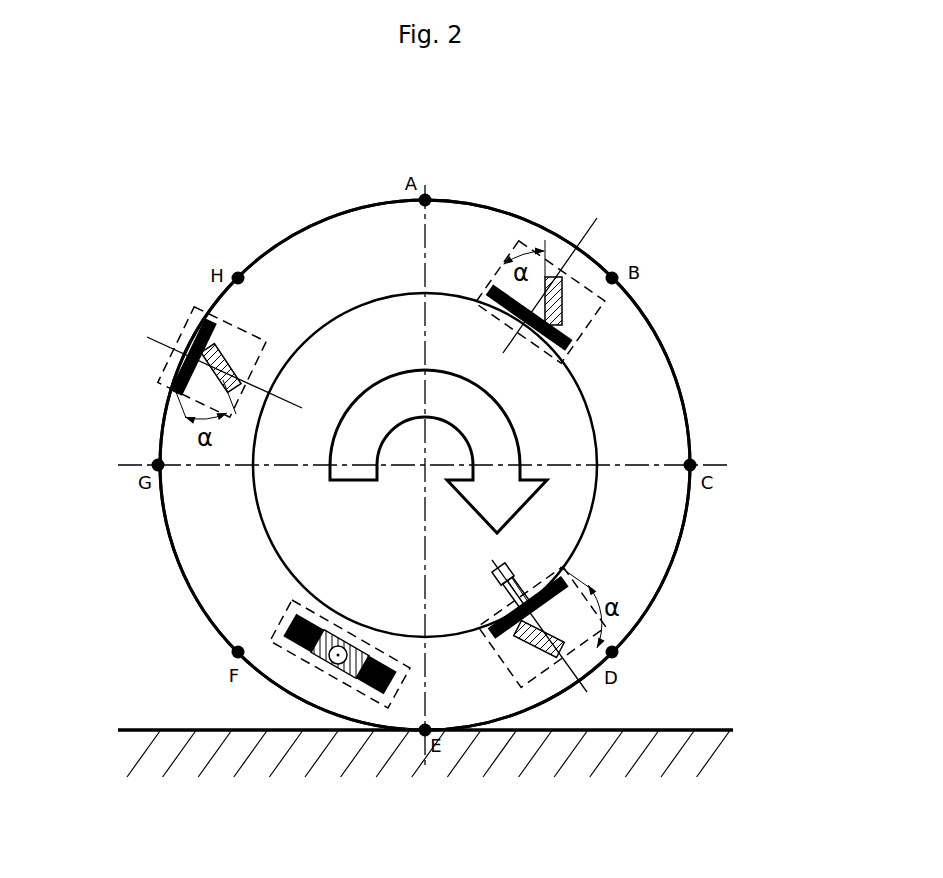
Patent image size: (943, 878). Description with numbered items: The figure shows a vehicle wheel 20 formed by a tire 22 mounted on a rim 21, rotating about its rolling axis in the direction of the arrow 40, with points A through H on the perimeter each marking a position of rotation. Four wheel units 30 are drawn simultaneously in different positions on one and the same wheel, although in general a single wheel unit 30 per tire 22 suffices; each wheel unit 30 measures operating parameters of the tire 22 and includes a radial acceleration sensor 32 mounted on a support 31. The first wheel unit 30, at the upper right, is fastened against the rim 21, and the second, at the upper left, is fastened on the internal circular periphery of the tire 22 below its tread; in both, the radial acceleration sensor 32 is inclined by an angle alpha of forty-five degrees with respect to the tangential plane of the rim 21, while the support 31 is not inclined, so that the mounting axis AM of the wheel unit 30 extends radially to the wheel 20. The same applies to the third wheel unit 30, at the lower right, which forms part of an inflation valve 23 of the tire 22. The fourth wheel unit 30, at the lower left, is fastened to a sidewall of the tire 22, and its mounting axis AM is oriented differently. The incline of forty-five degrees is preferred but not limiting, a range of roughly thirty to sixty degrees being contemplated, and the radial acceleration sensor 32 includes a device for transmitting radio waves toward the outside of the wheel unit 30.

The vehicle wheel 20 is at (690, 376).
The rim 21 is at (600, 447).
The tire 22 is at (328, 263).
The inflation valve 23 is at (520, 578).
The wheel unit 30 is at (193, 307).
The support 31 is at (178, 364).
The radial acceleration sensor 32 is at (237, 352).
The arrow 40 is at (498, 487).
The mounting axis AM is at (147, 337).